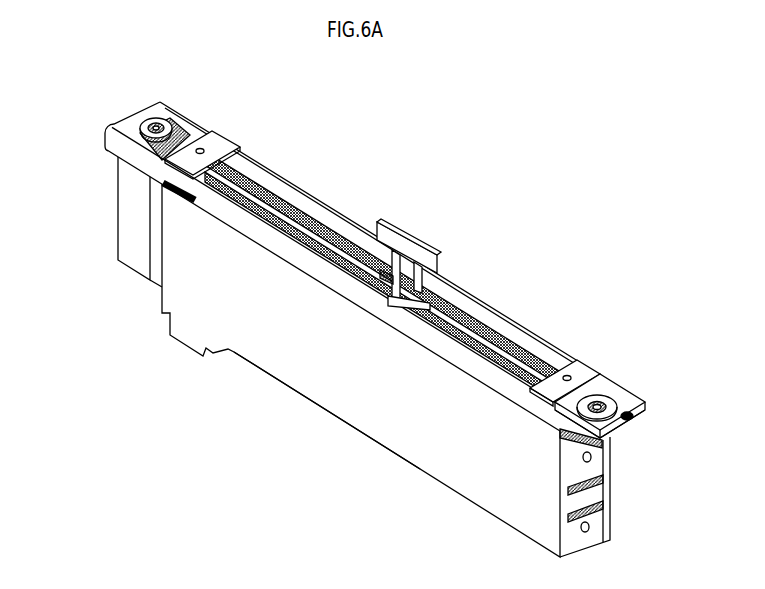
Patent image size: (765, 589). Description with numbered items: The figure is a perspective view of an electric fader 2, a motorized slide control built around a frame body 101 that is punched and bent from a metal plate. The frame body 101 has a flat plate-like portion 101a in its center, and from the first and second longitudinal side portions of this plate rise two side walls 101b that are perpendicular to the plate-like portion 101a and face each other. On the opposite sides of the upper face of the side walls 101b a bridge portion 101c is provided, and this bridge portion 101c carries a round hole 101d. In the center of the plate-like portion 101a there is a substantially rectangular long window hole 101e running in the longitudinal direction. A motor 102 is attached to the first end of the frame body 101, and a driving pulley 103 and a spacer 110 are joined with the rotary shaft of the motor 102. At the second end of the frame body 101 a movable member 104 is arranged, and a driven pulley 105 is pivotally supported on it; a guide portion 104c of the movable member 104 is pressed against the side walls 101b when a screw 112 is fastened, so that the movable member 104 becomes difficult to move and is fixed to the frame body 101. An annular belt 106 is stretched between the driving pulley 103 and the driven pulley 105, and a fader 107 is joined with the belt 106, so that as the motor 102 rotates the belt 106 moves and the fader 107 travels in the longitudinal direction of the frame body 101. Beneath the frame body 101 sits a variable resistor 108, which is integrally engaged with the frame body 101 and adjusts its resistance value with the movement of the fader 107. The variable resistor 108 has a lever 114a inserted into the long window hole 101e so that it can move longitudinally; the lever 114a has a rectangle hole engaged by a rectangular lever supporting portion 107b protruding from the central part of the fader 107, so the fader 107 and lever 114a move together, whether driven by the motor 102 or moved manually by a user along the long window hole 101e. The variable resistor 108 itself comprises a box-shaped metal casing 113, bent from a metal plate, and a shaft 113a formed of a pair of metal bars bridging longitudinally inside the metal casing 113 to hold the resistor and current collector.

The electric fader 2 is at (471, 114).
The frame body 101 is at (493, 303).
The plate-like portion 101a is at (622, 437).
The side walls 101b is at (526, 340).
The bridge portion 101c is at (228, 136).
The round hole 101d is at (517, 397).
The long window hole 101e is at (282, 174).
The motor 102 is at (113, 228).
The driving pulley 103 is at (135, 128).
The movable member 104 is at (642, 432).
The guide portion 104c is at (607, 403).
The driven pulley 105 is at (618, 412).
The belt 106 is at (320, 221).
The fader 107 is at (445, 288).
The lever supporting portion 107b is at (390, 298).
The variable resistor 108 is at (283, 391).
The spacer 110 is at (141, 110).
The screw 112 is at (638, 418).
The metal casing 113 is at (362, 440).
The shaft 113a is at (595, 458).
The lever 114a is at (413, 250).